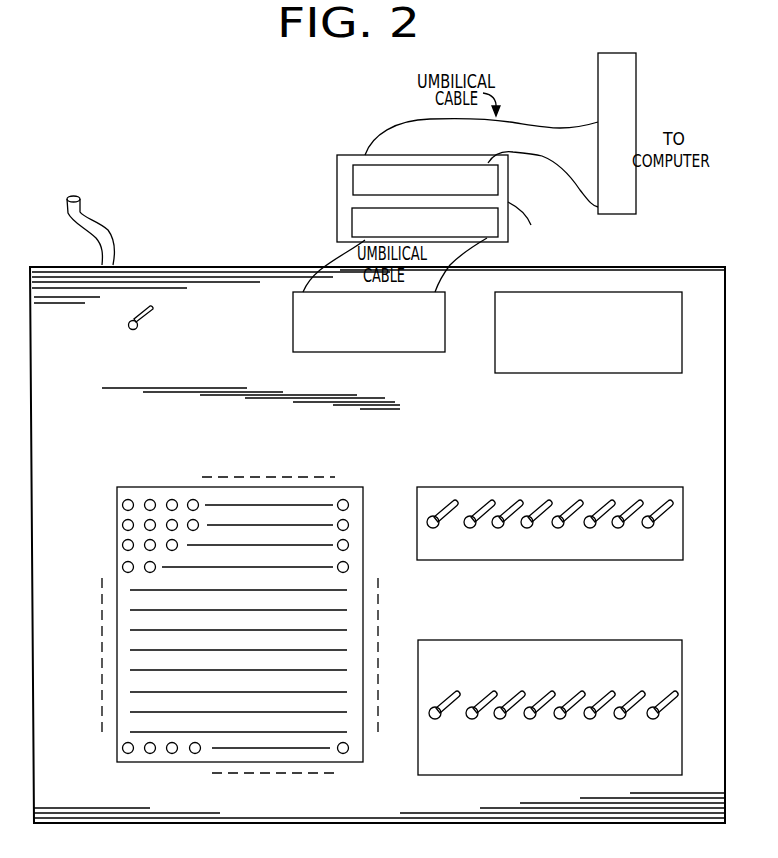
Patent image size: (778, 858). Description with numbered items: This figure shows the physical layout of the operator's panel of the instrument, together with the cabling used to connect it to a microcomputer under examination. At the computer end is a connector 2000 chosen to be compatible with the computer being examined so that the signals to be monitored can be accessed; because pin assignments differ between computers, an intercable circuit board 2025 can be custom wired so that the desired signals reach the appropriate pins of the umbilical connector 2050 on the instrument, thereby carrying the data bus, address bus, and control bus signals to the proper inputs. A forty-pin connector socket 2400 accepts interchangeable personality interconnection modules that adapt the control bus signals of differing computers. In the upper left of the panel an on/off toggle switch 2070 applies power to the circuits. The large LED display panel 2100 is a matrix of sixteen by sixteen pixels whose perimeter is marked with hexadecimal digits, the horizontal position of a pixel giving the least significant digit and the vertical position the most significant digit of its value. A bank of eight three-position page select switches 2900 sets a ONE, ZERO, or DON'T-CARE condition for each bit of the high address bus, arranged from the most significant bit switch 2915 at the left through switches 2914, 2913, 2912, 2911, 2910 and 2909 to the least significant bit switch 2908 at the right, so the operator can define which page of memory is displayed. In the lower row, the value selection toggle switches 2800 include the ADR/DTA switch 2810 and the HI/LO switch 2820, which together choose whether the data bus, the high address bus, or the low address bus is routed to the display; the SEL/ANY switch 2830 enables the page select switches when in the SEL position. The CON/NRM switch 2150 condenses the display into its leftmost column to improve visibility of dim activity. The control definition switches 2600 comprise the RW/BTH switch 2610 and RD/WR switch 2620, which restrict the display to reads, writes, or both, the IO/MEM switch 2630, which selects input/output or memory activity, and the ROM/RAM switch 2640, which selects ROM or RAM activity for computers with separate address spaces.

The connector 2000 is at (625, 111).
The intercable circuit board 2025 is at (337, 197).
The umbilical connector 2050 is at (293, 333).
The on/off toggle switch 2070 is at (128, 323).
The LED display panel 2100 is at (114, 478).
The personality interconnection module connector socket 2400 is at (600, 292).
The page select switches 2900 is at (538, 487).
The least significant bit page select switch 2908 is at (660, 504).
The page select switch 2909 is at (628, 522).
The page select switch 2910 is at (598, 504).
The page select switch 2911 is at (570, 521).
The page select switch 2912 is at (535, 505).
The page select switch 2913 is at (510, 521).
The page select switch 2914 is at (477, 504).
The most significant bit page select switch 2915 is at (445, 522).
The value selection toggle switches 2800 is at (492, 638).
The control definition switches 2600 is at (682, 638).
The ADR/DTA switch 2810 is at (461, 693).
The HI/LO switch 2820 is at (487, 706).
The SEL/ANY switch 2830 is at (528, 693).
The CON/NRM switch 2150 is at (540, 705).
The RW/BTH switch 2610 is at (574, 698).
The RD/WR switch 2620 is at (599, 707).
The IO/MEM switch 2630 is at (638, 690).
The ROM/RAM switch 2640 is at (664, 707).